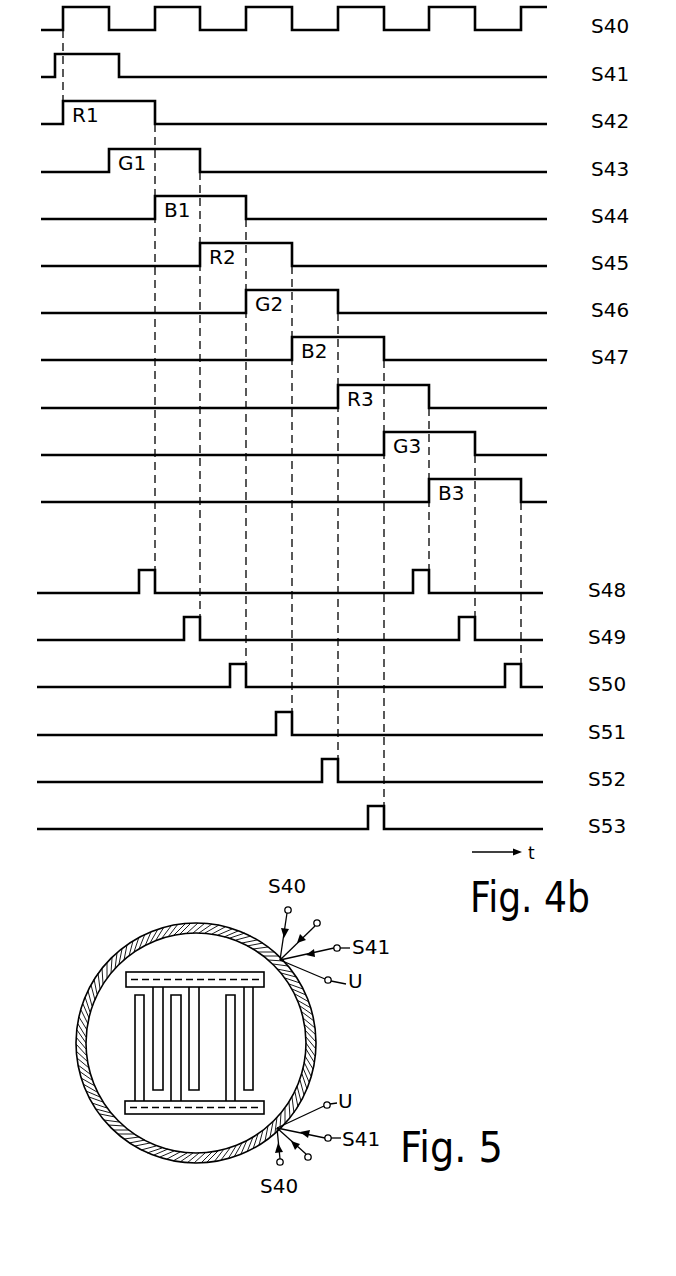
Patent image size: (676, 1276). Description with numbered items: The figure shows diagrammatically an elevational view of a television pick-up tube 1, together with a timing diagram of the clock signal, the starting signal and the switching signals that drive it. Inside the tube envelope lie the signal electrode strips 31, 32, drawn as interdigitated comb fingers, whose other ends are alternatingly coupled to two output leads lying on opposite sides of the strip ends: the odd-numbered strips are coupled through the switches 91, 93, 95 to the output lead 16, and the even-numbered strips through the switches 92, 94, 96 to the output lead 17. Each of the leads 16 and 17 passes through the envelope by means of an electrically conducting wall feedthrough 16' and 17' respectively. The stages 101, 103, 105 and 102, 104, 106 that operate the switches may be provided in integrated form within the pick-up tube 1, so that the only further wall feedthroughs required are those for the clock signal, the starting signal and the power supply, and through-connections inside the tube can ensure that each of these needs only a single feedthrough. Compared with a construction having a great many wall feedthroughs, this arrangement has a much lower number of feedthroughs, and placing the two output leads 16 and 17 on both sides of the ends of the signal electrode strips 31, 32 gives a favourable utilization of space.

The television pick-up tube 1 is at (310, 1030).
The signal electrode strip 31 is at (140, 1082).
The signal electrode strip 32 is at (158, 993).
The output lead 16 is at (157, 1101).
The wall feedthrough 16' is at (313, 1155).
The output lead 17 is at (157, 982).
The wall feedthrough 17' is at (323, 929).
The switch 91 is at (157, 1101).
The switch 92 is at (157, 982).
The switch 93 is at (157, 1101).
The switch 94 is at (157, 982).
The switch 95 is at (157, 1101).
The switch 96 is at (157, 982).
The stage 101 is at (157, 1101).
The stage 102 is at (157, 982).
The stage 103 is at (157, 1101).
The stage 104 is at (157, 982).
The stage 105 is at (157, 1101).
The stage 106 is at (157, 982).